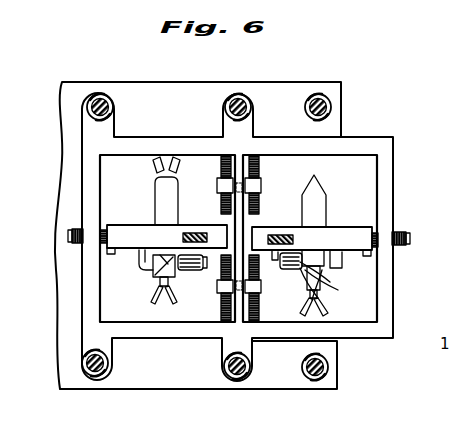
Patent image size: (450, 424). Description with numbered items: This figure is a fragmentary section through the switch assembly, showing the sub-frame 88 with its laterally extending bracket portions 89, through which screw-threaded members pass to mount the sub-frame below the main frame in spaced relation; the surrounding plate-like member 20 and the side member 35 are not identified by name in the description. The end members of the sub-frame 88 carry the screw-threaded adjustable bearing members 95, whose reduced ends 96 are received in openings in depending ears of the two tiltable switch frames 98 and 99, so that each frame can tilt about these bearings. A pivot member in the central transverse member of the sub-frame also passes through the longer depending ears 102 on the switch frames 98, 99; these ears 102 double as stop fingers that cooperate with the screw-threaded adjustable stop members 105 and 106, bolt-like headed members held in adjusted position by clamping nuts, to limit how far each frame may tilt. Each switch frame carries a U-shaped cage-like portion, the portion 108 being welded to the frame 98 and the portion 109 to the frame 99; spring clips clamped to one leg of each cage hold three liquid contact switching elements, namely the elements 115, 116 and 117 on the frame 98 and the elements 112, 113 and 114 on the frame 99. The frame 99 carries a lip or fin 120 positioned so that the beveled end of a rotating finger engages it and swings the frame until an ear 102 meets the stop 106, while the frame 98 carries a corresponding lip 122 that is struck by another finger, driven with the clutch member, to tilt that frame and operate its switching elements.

The mounting plate 20 is at (198, 378).
The sub-frame 88 is at (363, 142).
The laterally extending bracket portions 89 is at (253, 120).
The adjustable stop member 106 is at (220, 152).
The adjustable stop member 105 is at (220, 310).
The tiltable switch frame 98 is at (133, 233).
The tiltable switch frame 99 is at (335, 237).
The lip or fin 122 is at (196, 234).
The lip or fin 120 is at (282, 234).
The liquid contact switching element 117 is at (168, 192).
The liquid contact switching element 114 is at (312, 200).
The reduced ends 96 is at (103, 230).
The left side screw 35 is at (71, 237).
The screw-threaded adjustable bearing members 95 is at (398, 233).
The U-shaped cage-like portion 108 is at (141, 258).
The liquid contact switching element 116 is at (161, 265).
The liquid contact switching element 115 is at (163, 280).
The depending ears 102 is at (222, 258).
The U-shaped cage-like portion 109 is at (330, 273).
The liquid contact switching element 113 is at (320, 286).
The liquid contact switching element 112 is at (326, 301).